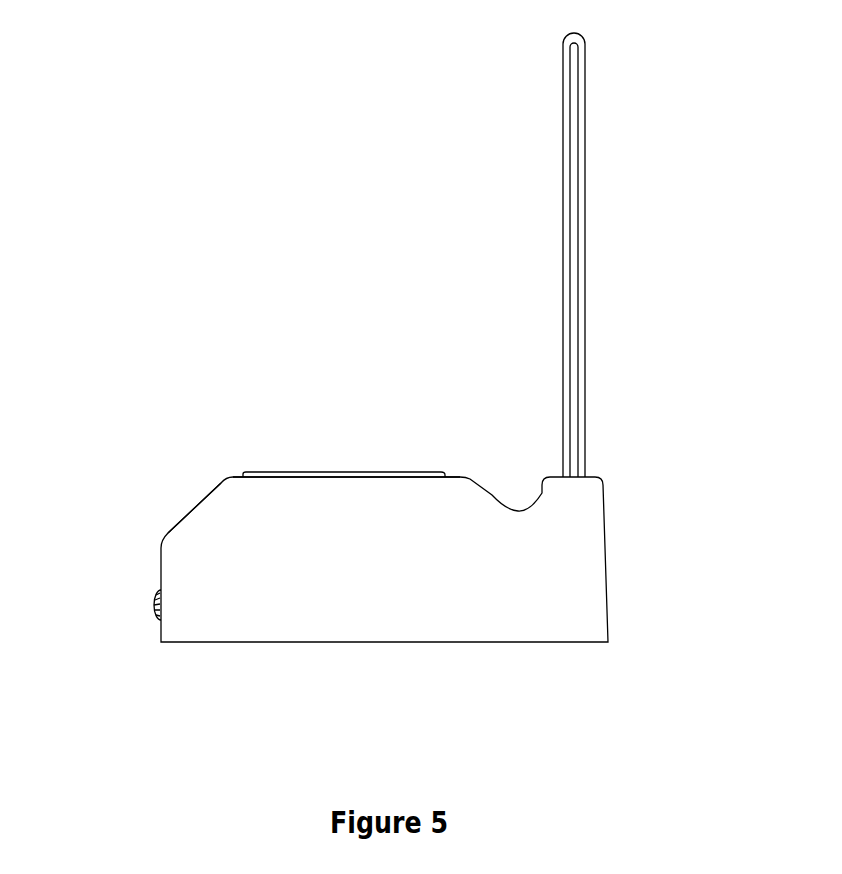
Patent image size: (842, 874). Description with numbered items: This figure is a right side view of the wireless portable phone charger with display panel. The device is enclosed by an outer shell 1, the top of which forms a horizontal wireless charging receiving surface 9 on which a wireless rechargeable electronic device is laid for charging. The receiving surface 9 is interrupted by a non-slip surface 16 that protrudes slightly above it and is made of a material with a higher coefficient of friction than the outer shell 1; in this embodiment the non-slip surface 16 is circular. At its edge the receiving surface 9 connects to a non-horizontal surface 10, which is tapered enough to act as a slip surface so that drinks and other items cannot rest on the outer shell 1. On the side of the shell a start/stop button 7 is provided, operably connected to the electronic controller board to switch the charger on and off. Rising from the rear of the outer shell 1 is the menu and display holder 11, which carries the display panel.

The outer shell 1 is at (495, 563).
The start/stop button 7 is at (140, 605).
The horizontal wireless charging receiving surface 9 is at (234, 472).
The non-horizontal surface 10 is at (186, 508).
The menu and display holder 11 is at (560, 150).
The non-slip surface 16 is at (322, 468).